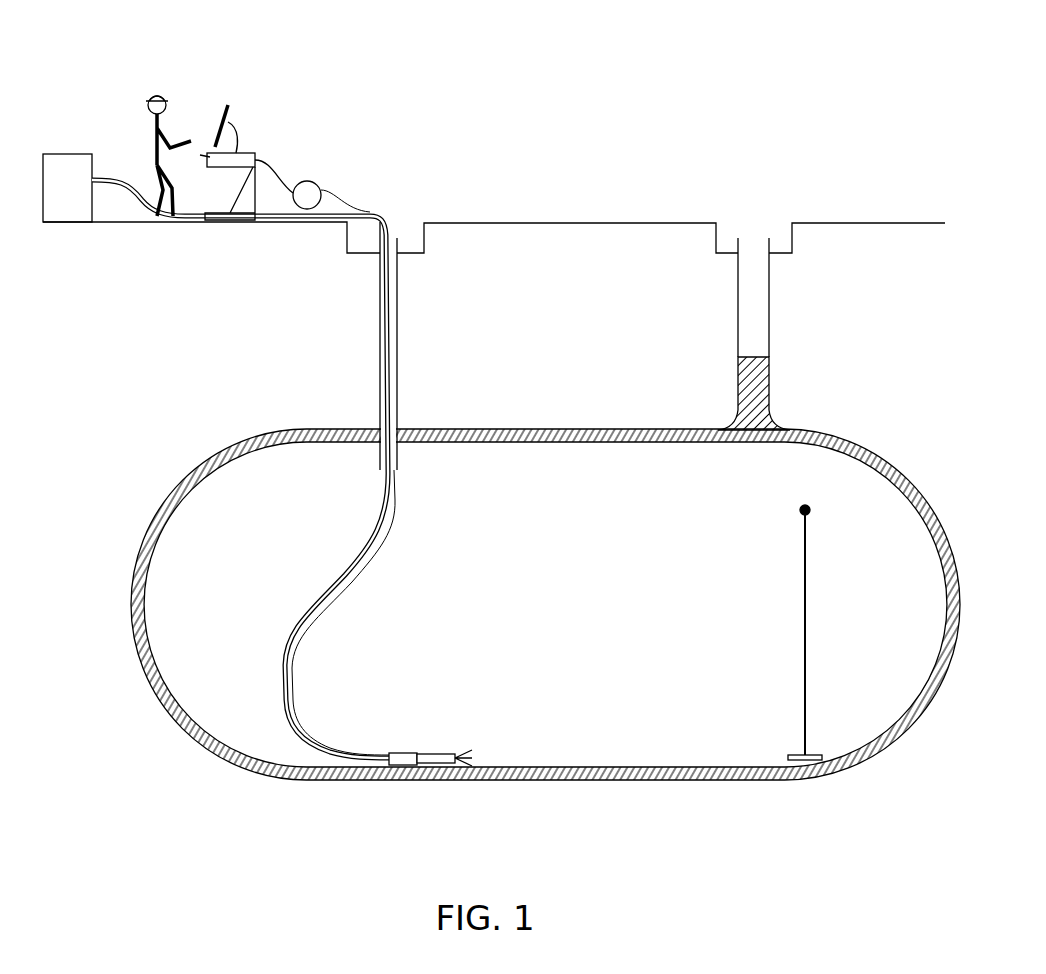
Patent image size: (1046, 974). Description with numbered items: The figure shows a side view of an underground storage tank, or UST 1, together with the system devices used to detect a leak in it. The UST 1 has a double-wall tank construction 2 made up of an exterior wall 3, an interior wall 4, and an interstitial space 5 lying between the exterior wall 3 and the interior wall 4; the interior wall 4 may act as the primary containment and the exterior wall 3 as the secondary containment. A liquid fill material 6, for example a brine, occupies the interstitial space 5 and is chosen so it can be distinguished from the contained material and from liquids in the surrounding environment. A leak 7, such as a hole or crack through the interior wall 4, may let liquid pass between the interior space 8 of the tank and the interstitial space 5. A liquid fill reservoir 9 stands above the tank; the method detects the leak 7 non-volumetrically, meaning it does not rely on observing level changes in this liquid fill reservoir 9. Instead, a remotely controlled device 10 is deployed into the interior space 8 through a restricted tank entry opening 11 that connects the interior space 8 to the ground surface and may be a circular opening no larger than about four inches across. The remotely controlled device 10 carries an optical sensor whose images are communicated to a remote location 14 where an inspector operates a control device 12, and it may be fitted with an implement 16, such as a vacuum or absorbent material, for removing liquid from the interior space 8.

The UST 1 is at (899, 423).
The double-wall tank construction 2 is at (197, 778).
The exterior wall 3 is at (887, 754).
The interior wall 4 is at (920, 692).
The interstitial space 5 is at (935, 690).
The liquid fill material 6 is at (797, 755).
The leak 7 is at (800, 510).
The interior space 8 is at (532, 508).
The liquid fill reservoir 9 is at (768, 372).
The remotely controlled device 10 is at (440, 754).
The restricted tank entry opening 11 is at (402, 341).
The control computer 12 is at (248, 154).
The remote location 14 is at (137, 78).
The implement 16 is at (402, 780).